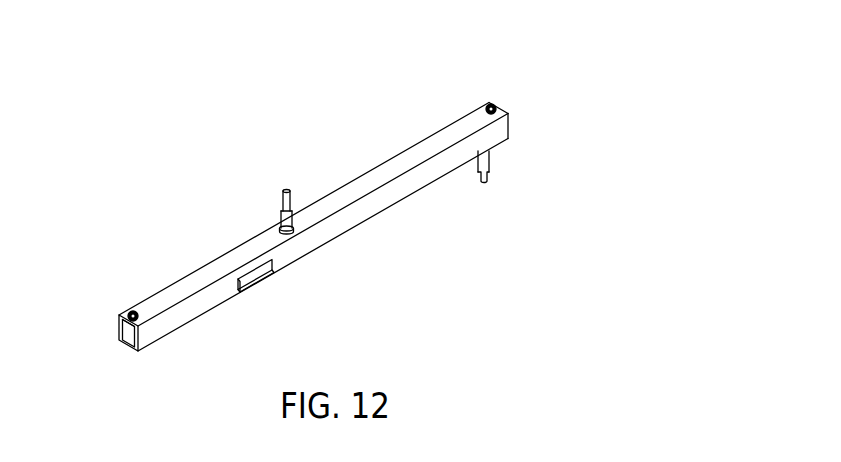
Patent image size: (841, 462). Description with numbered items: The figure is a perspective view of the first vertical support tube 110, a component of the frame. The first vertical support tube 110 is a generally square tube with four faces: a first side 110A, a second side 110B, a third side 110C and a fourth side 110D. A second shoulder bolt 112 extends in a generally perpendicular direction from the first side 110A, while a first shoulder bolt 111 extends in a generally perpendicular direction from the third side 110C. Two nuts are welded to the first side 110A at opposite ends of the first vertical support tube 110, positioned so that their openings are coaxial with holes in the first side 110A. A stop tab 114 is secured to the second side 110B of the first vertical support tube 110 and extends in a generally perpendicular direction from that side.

The first vertical support tube 110 is at (270, 250).
The first side 110A is at (404, 160).
The second side 110B is at (333, 230).
The third side 110C is at (127, 349).
The fourth side 110D is at (118, 327).
The first shoulder bolt 111 is at (487, 184).
The second shoulder bolt 112 is at (289, 190).
The stop tab 114 is at (256, 288).